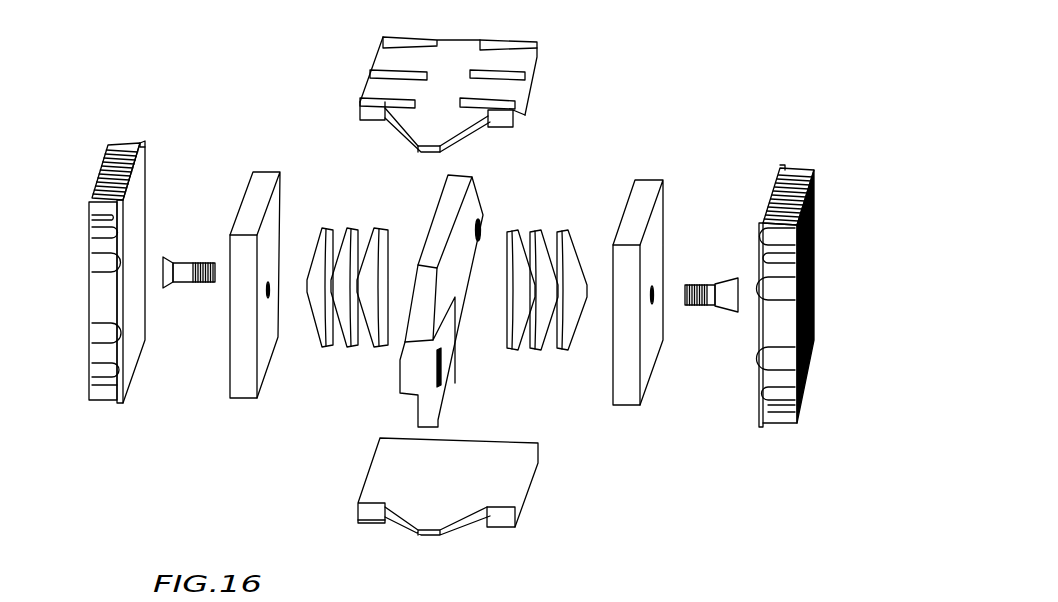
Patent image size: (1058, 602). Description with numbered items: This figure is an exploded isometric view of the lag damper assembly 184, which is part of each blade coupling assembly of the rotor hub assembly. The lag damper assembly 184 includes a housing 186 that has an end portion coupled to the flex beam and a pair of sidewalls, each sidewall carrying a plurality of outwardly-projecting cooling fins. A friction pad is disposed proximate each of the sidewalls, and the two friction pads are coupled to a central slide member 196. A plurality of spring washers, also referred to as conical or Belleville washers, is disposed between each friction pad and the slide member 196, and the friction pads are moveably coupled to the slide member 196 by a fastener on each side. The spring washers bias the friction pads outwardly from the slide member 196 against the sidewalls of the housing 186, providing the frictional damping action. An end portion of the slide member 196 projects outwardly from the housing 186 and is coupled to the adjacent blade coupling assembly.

The lag damper assembly 184 is at (843, 98).
The housing 186 is at (838, 173).
The slide member 196 is at (418, 377).